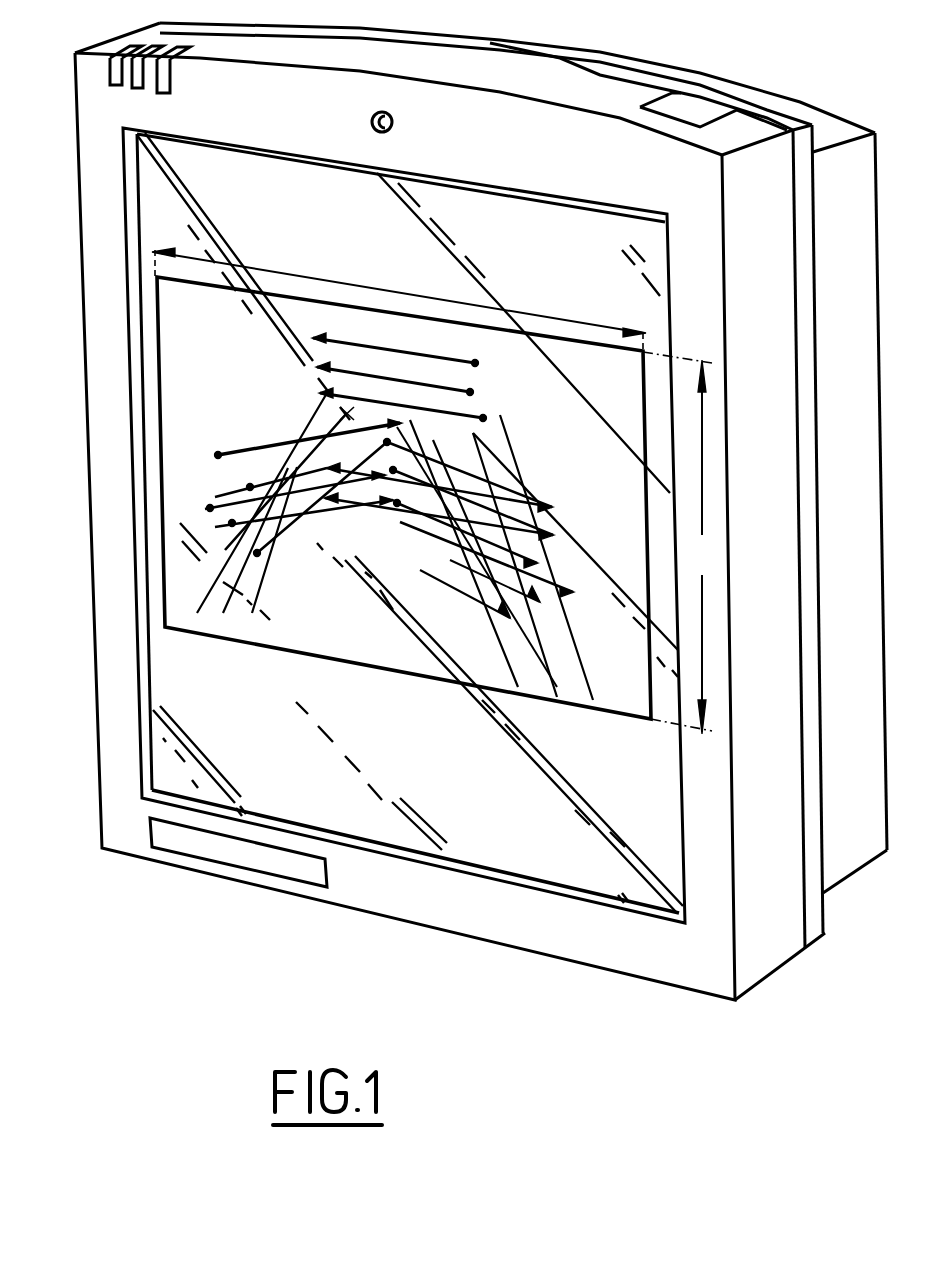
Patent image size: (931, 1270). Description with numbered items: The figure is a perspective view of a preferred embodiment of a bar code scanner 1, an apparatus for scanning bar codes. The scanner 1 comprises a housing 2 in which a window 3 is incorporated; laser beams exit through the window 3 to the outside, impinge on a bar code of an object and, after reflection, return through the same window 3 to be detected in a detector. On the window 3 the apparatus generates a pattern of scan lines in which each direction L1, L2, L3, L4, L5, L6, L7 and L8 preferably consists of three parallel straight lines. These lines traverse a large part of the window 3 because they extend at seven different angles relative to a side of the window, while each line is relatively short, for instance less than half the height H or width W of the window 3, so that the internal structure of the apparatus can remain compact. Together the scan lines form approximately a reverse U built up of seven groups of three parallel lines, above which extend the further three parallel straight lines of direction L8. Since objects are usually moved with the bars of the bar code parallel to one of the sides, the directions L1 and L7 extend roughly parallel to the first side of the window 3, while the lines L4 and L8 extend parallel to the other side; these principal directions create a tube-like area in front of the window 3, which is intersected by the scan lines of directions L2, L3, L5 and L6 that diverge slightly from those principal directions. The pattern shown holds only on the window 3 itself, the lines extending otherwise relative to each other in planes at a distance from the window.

The bar code scanner 1 is at (458, 518).
The housing 2 is at (97, 531).
The window 3 is at (170, 324).
The scan line direction L1 is at (252, 617).
The scan line direction L2 is at (212, 512).
The scan line direction L3 is at (240, 480).
The scan line direction L4 is at (393, 473).
The scan line direction L5 is at (553, 535).
The scan line direction L6 is at (537, 563).
The scan line direction L7 is at (518, 687).
The scan line direction L8 is at (475, 363).
The width of the window W is at (399, 300).
The height of the window H is at (677, 543).